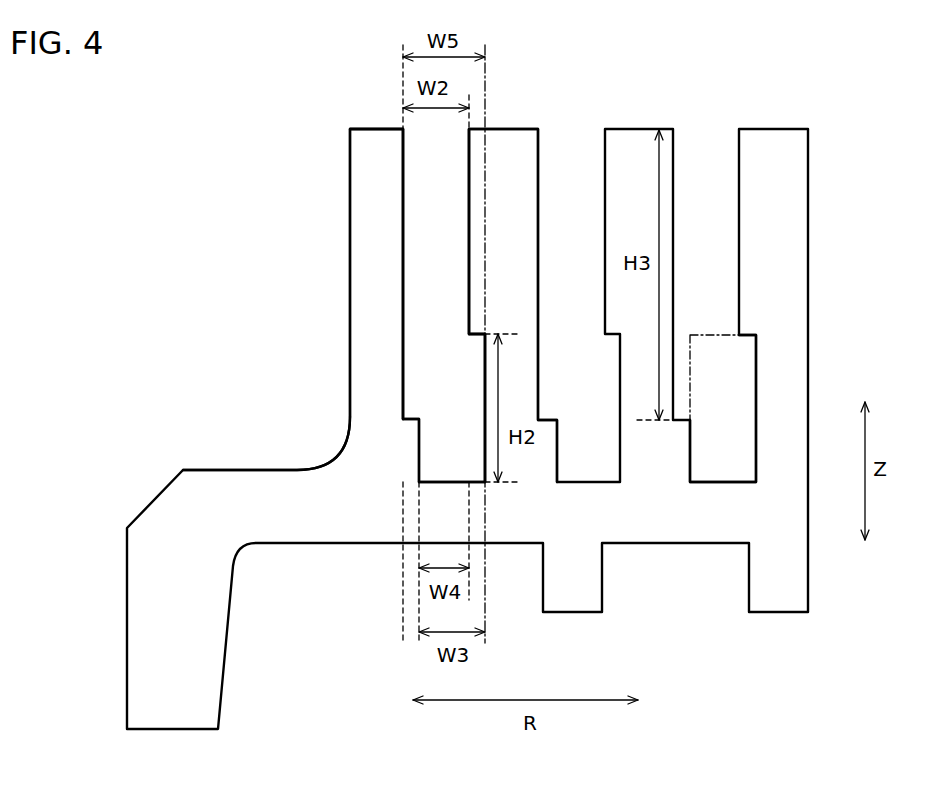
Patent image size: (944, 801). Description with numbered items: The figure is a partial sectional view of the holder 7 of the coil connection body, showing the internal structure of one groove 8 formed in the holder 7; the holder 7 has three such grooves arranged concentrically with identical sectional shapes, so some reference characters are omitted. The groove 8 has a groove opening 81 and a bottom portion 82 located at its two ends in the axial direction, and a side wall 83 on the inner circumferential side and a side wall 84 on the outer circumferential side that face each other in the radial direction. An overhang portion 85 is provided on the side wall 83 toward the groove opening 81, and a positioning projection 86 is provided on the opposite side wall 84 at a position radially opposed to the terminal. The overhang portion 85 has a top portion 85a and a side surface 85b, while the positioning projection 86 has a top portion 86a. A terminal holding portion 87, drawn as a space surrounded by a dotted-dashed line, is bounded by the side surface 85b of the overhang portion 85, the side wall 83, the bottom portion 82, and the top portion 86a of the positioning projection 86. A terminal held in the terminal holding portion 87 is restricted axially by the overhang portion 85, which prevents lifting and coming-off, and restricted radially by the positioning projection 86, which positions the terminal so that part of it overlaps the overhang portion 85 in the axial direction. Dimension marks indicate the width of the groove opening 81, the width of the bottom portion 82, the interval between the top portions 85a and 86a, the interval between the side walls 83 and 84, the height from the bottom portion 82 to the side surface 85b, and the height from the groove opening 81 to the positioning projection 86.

The holder 7 is at (127, 611).
The groove 8 is at (420, 208).
The groove opening 81 is at (432, 130).
The bottom portion 82 is at (408, 482).
The side wall 83 is at (485, 396).
The side wall 84 is at (403, 258).
The overhang portion 85 is at (477, 173).
The top portion of the overhang portion 85a is at (468, 213).
The side surface of the overhang portion 85b is at (470, 342).
The positioning projection 86 is at (413, 443).
The top portion of the positioning projection 86a is at (428, 425).
The terminal holding portion 87 is at (735, 412).